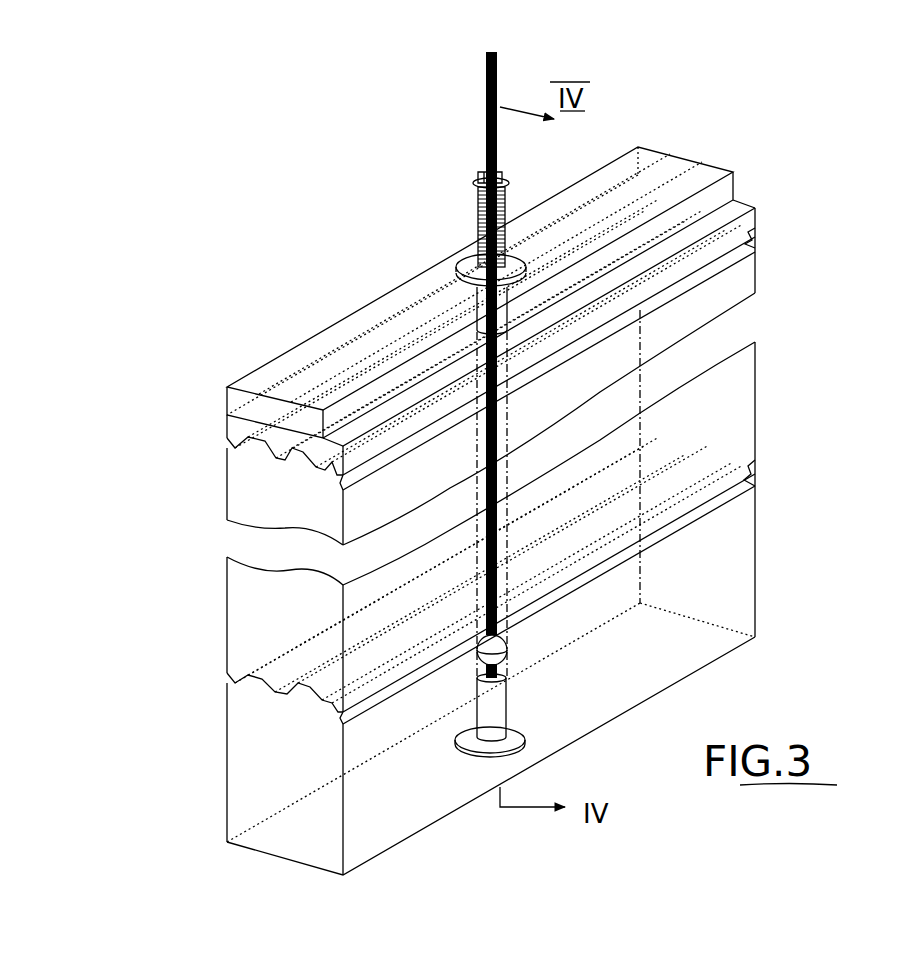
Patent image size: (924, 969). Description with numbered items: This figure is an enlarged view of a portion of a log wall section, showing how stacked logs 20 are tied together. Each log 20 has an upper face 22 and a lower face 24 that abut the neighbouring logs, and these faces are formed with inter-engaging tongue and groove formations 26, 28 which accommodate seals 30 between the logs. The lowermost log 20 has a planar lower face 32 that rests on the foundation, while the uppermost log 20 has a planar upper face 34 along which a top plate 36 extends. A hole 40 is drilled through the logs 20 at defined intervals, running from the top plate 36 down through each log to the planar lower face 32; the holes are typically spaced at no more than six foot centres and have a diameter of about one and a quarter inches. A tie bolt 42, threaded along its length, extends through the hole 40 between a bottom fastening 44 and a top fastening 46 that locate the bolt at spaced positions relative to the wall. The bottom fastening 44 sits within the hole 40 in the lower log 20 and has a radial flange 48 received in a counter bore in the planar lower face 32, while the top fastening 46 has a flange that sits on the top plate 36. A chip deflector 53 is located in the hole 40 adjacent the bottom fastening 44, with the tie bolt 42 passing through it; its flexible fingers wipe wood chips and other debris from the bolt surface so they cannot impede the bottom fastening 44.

The log 20 is at (770, 542).
The upper face 22 is at (240, 438).
The lower face 24 is at (227, 678).
The tongue and groove formation 26 is at (252, 450).
The tongue and groove formation 28 is at (247, 660).
The seal 30 is at (312, 462).
The planar lower face 32 is at (255, 852).
The planar upper face 34 is at (245, 415).
The top plate 36 is at (307, 350).
The hole 40 is at (508, 395).
The tie bolt 42 is at (485, 133).
The bottom fastening 44 is at (513, 705).
The top fastening 46 is at (455, 290).
The radial flange 48 is at (528, 737).
The chip deflector 53 is at (512, 647).